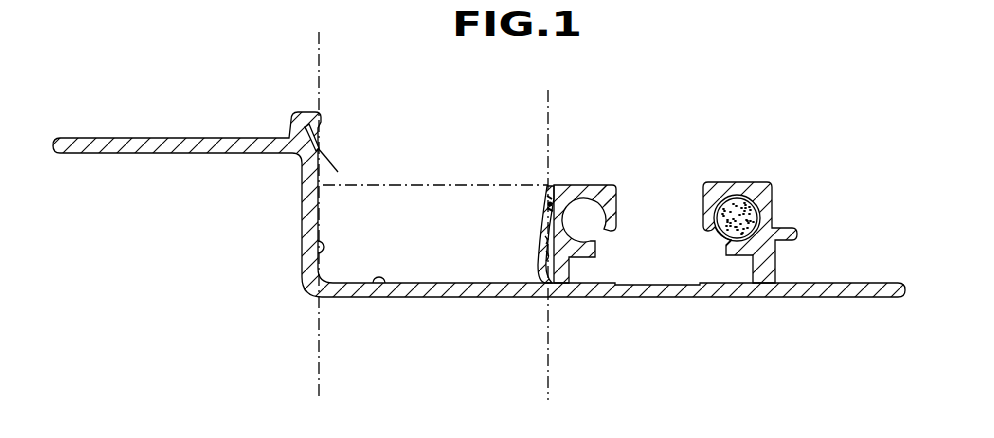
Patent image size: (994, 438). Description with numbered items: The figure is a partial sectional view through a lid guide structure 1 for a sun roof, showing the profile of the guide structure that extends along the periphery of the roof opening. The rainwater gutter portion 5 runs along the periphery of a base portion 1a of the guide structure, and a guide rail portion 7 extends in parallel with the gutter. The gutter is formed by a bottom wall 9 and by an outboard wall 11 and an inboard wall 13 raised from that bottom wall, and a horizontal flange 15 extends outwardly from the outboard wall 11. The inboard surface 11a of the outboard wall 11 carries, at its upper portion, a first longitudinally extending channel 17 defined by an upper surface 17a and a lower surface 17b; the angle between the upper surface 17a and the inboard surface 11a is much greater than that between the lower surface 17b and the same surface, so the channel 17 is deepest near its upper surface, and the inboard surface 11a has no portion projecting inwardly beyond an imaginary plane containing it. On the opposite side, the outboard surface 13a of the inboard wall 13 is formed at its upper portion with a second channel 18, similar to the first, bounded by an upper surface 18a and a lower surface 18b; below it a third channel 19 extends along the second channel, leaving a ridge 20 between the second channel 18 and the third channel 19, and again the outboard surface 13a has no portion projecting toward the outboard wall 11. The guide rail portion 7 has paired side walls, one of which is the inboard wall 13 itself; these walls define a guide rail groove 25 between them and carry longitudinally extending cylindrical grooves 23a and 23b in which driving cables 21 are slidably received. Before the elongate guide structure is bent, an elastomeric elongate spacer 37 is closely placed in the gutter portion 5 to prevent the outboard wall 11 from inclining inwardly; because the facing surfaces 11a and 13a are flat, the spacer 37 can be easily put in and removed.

The lid guide structure 1 is at (814, 301).
The base portion 1a is at (777, 263).
The rainwater gutter portion 5 is at (428, 301).
The guide rail portion 7 is at (694, 301).
The bottom wall 9 is at (378, 285).
The outboard wall 11 is at (302, 226).
The inboard surface 11a is at (314, 252).
The inboard wall 13 is at (580, 276).
The outboard surface 13a is at (541, 298).
The horizontal flange 15 is at (205, 137).
The first longitudinally extending channel 17 is at (334, 153).
The upper surface 17a is at (323, 119).
The lower surface 17b is at (298, 162).
The second longitudinally extending channel 18 is at (547, 204).
The upper surface 18a is at (545, 197).
The lower surface 18b is at (546, 210).
The third channel 19 is at (546, 256).
The ridge 20 is at (545, 240).
The driving cable 21 is at (752, 218).
The cylindrical groove 23a is at (606, 184).
The cylindrical groove 23b is at (737, 194).
The guide rail groove 25 is at (747, 287).
The elastomeric elongate spacer 37 is at (423, 185).